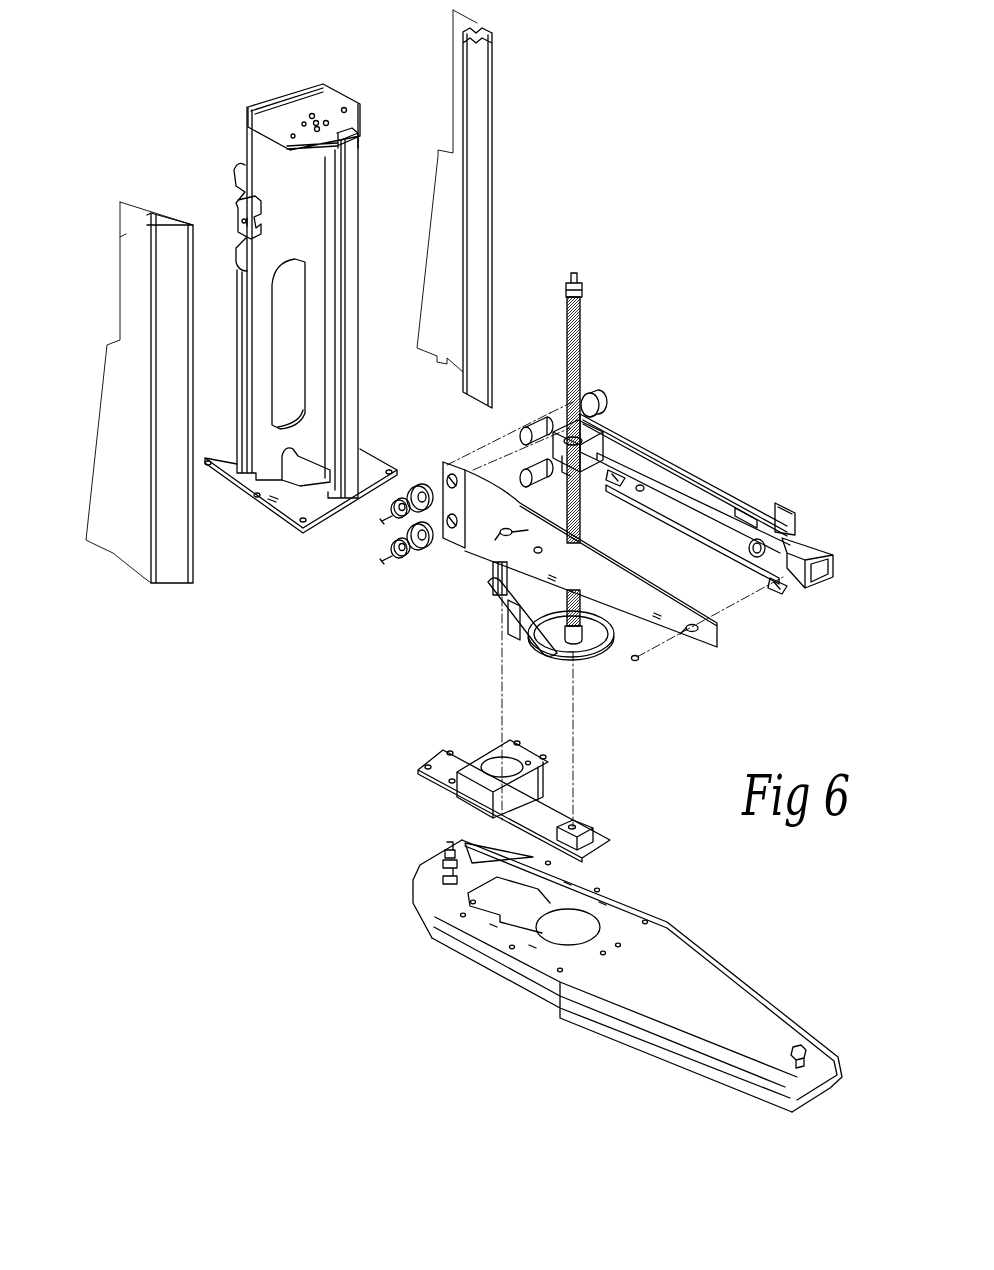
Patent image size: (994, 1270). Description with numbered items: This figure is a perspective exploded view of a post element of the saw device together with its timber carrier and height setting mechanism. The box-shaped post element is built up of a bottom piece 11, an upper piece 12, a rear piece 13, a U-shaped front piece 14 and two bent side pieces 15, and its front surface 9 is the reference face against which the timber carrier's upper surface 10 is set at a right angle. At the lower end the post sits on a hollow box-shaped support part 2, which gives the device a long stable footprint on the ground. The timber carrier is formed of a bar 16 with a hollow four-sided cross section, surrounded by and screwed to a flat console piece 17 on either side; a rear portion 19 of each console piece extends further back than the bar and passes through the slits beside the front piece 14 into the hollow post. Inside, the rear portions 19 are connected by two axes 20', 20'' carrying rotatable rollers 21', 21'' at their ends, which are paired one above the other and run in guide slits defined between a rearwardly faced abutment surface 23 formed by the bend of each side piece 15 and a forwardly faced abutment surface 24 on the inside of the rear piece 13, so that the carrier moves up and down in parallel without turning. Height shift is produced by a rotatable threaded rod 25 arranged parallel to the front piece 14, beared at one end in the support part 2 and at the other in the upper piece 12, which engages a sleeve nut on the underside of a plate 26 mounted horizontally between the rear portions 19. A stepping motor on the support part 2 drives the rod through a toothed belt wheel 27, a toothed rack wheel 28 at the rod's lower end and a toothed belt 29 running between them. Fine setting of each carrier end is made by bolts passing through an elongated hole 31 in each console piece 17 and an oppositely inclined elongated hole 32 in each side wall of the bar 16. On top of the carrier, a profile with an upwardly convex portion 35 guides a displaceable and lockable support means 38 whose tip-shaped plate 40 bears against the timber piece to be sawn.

The support part 2 is at (682, 970).
The front surface 9 is at (348, 287).
The upper surface 10 is at (678, 473).
The bottom piece 11 is at (297, 507).
The upper piece 12 is at (330, 97).
The rear piece 13 is at (262, 167).
The front piece 14 is at (364, 360).
The side piece 15 is at (112, 407).
The bar 16 is at (688, 515).
The console piece 17 is at (600, 580).
The rear portion 19 is at (457, 540).
The axis 20' is at (555, 401).
The axis 20'' is at (516, 457).
The upper roller 21' is at (418, 473).
The lower roller 21'' is at (403, 571).
The rearwardly faced abutment surface 23 is at (147, 218).
The forwardly faced abutment surface 24 is at (265, 362).
The threaded rod 25 is at (583, 357).
The plate 26 is at (595, 442).
The toothed belt wheel 27 is at (507, 625).
The toothed rack wheel 28 is at (590, 642).
The toothed belt 29 is at (513, 643).
The elongated hole 31 is at (505, 527).
The elongated and inclined hole 32 is at (620, 475).
The upwardly convex portion 35 is at (808, 547).
The support means 38 is at (797, 506).
The tip-shaped plate 40 is at (753, 523).